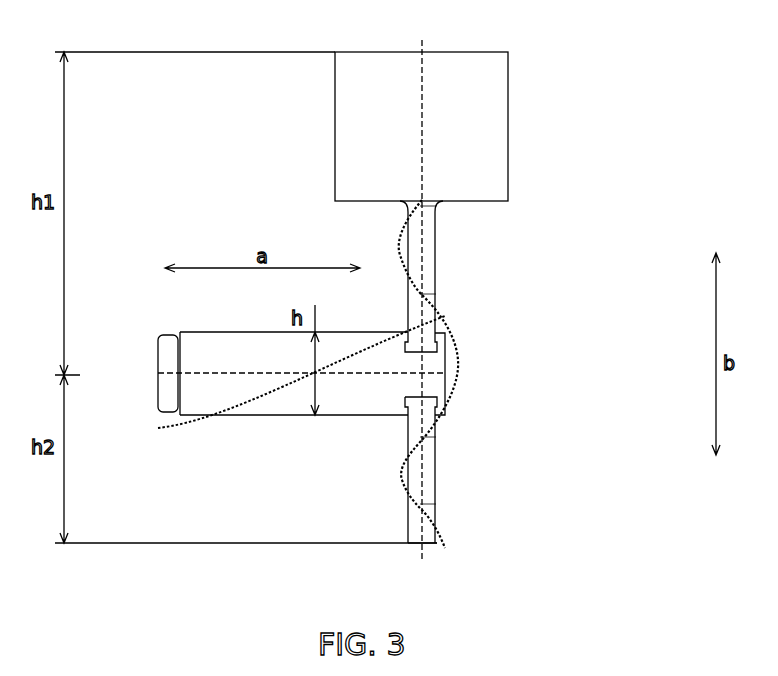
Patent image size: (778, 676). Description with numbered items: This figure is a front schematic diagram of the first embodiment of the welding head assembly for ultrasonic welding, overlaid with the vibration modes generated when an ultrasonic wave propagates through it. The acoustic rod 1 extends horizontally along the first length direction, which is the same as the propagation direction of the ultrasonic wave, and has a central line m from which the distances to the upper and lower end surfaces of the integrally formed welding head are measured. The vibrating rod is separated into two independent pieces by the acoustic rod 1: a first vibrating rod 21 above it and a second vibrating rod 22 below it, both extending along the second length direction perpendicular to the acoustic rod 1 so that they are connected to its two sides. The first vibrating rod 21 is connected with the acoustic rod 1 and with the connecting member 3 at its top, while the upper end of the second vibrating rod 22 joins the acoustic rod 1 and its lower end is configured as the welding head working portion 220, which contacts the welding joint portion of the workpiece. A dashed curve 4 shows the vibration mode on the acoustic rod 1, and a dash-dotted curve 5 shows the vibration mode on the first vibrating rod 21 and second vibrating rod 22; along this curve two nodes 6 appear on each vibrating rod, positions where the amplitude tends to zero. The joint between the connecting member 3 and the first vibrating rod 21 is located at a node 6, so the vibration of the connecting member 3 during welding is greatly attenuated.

The acoustic rod 1 is at (240, 345).
The central line m is at (200, 374).
The connecting member 3 is at (482, 126).
The dashed curve 4 is at (277, 410).
The dash-dotted curve 5 is at (468, 367).
The node 6 is at (443, 212).
The first vibrating rod 21 is at (442, 249).
The second vibrating rod 22 is at (442, 474).
The welding head working portion 220 is at (439, 562).